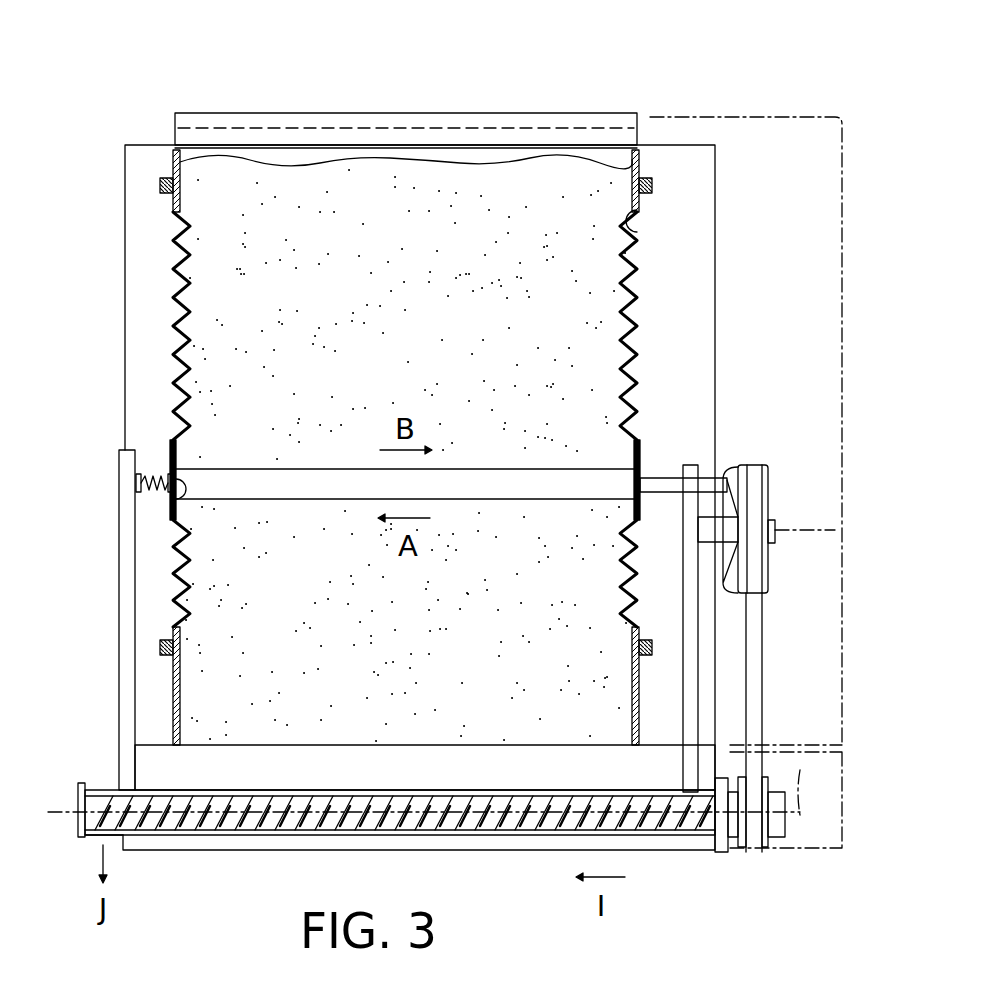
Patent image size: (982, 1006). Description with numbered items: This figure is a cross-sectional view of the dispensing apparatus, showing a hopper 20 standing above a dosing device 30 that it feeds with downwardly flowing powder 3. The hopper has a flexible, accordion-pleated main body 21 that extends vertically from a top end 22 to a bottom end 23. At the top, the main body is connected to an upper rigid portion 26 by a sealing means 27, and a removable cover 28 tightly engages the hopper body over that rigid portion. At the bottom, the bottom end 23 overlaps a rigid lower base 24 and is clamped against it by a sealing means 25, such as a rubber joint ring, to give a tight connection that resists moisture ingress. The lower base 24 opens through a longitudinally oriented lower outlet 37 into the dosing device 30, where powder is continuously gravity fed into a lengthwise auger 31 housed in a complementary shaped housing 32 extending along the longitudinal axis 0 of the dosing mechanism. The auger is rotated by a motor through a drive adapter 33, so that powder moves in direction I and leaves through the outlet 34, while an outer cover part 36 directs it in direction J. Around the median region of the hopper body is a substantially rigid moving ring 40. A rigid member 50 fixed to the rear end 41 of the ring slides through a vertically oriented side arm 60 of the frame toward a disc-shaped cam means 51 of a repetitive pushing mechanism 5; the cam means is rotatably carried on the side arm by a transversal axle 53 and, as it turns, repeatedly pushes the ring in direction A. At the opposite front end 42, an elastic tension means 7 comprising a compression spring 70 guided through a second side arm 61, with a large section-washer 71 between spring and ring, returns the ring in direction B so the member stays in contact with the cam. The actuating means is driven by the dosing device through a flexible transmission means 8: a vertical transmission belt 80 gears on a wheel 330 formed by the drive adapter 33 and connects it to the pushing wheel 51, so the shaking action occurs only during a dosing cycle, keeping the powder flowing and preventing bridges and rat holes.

The powder 3 is at (401, 226).
The removable cover 28 is at (583, 115).
The sealing means 27 is at (652, 182).
The upper rigid portion 26 is at (652, 228).
The top end 22 is at (160, 232).
The main body 21 is at (190, 318).
The bottom end 23 is at (178, 600).
The moving ring 40 is at (250, 482).
The front end 42 is at (173, 517).
The compression spring 70 is at (160, 492).
The elastic tension means 7 is at (142, 476).
The large section-washer 71 is at (170, 480).
The second side arm 61 is at (119, 655).
The lower outlet 37 is at (258, 743).
The rigid lower base 24 is at (640, 740).
The sealing means 25 is at (652, 642).
The rear end 41 is at (640, 438).
The rigid member 50 is at (668, 478).
The disc-shaped cam means 51 is at (732, 466).
The repetitive pushing mechanism 5 is at (778, 440).
The side arm 60 is at (693, 573).
The transversal axle 53 is at (778, 524).
The vertical transmission belt 80 is at (763, 667).
The flexible transmission means 8 is at (802, 690).
The wheel 330 is at (768, 850).
The drive adapter 33 is at (785, 826).
The hopper 20 is at (842, 432).
The dosing device 30 is at (842, 805).
The auger 31 is at (262, 820).
The housing 32 is at (415, 828).
The outer cover part 36 is at (85, 795).
The outlet 34 is at (96, 843).
The longitudinal axis 0 is at (803, 790).